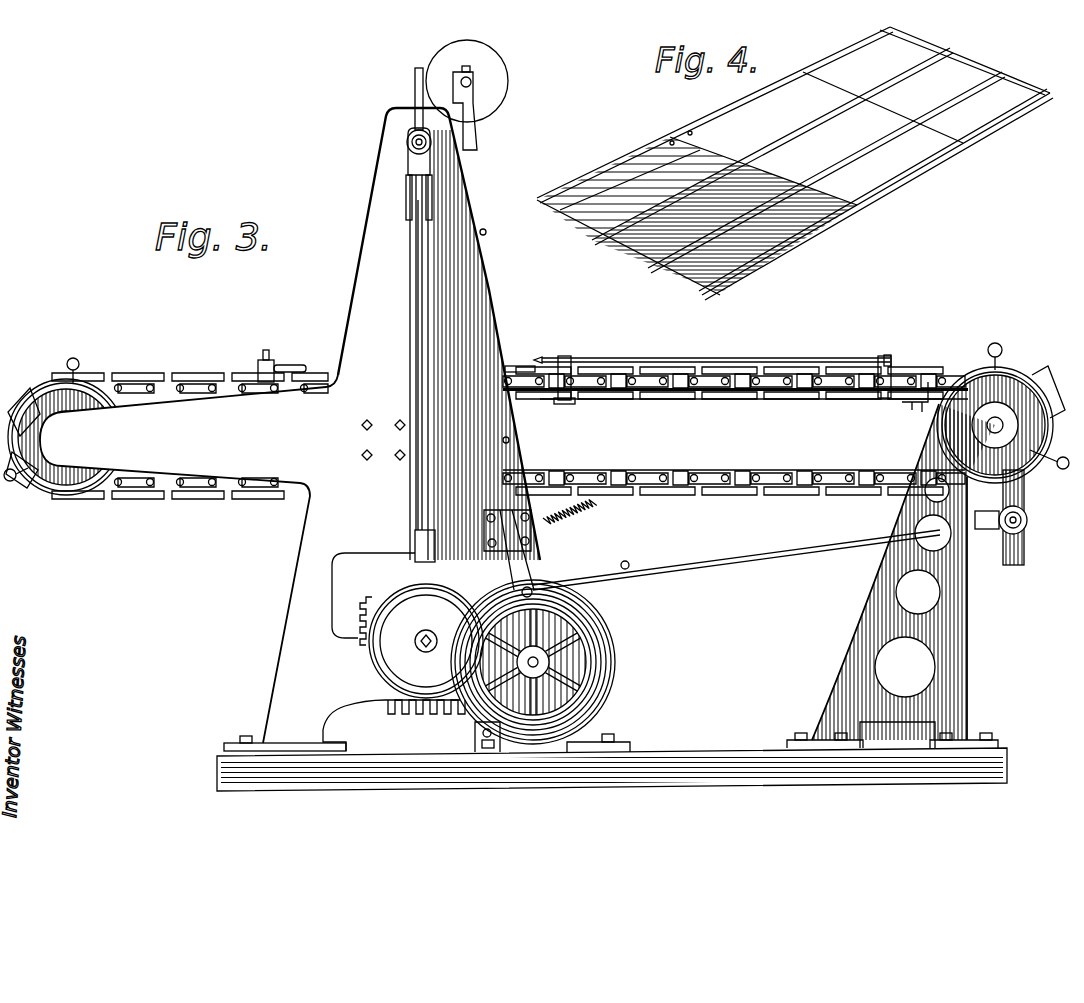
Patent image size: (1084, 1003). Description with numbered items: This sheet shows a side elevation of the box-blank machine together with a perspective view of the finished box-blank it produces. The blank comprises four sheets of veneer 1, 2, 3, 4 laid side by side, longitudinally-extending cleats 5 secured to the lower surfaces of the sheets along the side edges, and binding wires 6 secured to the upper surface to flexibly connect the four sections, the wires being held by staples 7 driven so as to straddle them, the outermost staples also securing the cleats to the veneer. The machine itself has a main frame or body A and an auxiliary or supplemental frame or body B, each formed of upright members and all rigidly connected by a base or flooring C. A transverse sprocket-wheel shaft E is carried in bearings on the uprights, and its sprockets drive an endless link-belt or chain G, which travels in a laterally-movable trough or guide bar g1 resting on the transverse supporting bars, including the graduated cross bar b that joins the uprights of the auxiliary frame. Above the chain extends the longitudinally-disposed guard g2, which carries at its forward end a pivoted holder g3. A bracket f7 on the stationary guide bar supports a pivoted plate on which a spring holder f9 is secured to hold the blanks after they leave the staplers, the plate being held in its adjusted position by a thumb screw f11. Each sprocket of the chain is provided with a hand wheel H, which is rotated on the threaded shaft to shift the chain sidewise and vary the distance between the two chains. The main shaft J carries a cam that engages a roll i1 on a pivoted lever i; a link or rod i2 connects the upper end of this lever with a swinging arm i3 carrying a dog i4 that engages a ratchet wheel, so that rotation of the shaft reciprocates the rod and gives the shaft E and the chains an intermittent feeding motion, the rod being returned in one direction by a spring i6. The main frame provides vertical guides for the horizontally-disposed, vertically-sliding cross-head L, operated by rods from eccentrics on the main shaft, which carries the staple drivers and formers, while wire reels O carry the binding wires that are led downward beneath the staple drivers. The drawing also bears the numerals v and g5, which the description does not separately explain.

In FIG. 3, the main frame A is at (318, 533).
In FIG. 3, the auxiliary frame B is at (880, 596).
In FIG. 3, the base or flooring C is at (716, 755).
In FIG. 3, the transverse sprocket-wheel shaft E is at (998, 418).
In FIG. 3, the endless link-belt or chain G is at (787, 366).
In FIG. 3, the hand wheel H is at (52, 392).
In FIG. 3, the main shaft J is at (420, 648).
In FIG. 3, the cross-head L is at (418, 122).
In FIG. 3, the wire reel O is at (490, 74).
In FIG. 3, the vertical rod v is at (426, 412).
In FIG. 3, the graduated cross bar b is at (914, 398).
In FIG. 3, the laterally-movable guide bar g1 is at (690, 399).
In FIG. 3, the guard g2 is at (600, 357).
In FIG. 3, the pivoted holder g3 is at (522, 364).
In FIG. 3, the hanger g5 is at (564, 404).
In FIG. 3, the pivoted lever i is at (474, 735).
In FIG. 3, the roll i1 is at (403, 598).
In FIG. 3, the link or rod i2 is at (718, 560).
In FIG. 3, the swinging arm i3 is at (1004, 500).
In FIG. 3, the dog i4 is at (1028, 486).
In FIG. 3, the spring i6 is at (587, 533).
In FIG. 3, the bracket f7 is at (262, 370).
In FIG. 3, the spring holder f9 is at (300, 364).
In FIG. 3, the thumb screw f11 is at (267, 350).
In FIG. 4, the sheet of veneer 1 is at (692, 265).
In FIG. 4, the sheet of veneer 2 is at (815, 215).
In FIG. 4, the sheet of veneer 3 is at (903, 163).
In FIG. 4, the sheet of veneer 4 is at (962, 128).
In FIG. 4, the cleat 5 is at (850, 186).
In FIG. 4, the binding wire 6 is at (893, 30).
In FIG. 4, the staple 7 is at (672, 141).